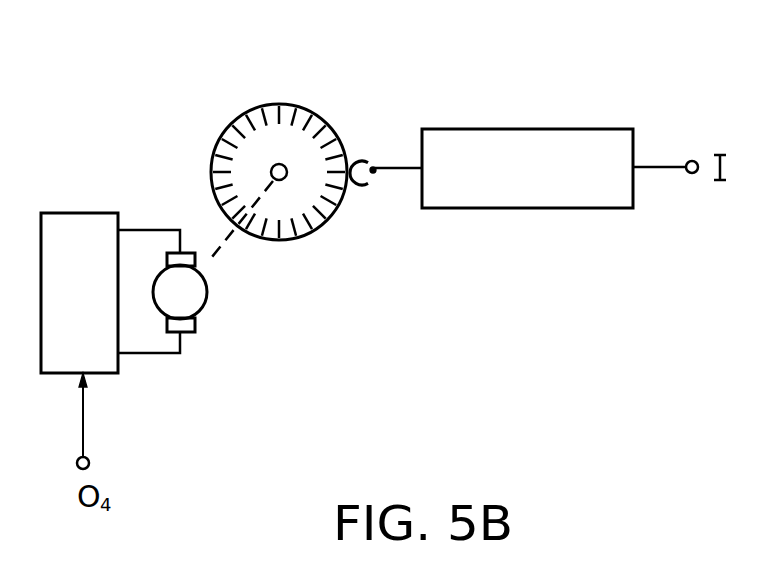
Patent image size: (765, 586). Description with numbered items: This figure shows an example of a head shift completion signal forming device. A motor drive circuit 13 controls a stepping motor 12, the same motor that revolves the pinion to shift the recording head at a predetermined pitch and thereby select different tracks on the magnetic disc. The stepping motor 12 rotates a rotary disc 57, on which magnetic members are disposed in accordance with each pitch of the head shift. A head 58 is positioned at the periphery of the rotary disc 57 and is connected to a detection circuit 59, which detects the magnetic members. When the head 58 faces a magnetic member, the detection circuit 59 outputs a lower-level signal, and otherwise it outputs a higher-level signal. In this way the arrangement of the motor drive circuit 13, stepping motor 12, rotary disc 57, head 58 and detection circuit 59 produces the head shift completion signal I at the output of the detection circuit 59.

The motor drive circuit 13 is at (88, 212).
The stepping motor 12 is at (207, 293).
The rotary disc 57 is at (303, 103).
The head 58 is at (362, 160).
The detection circuit 59 is at (583, 128).